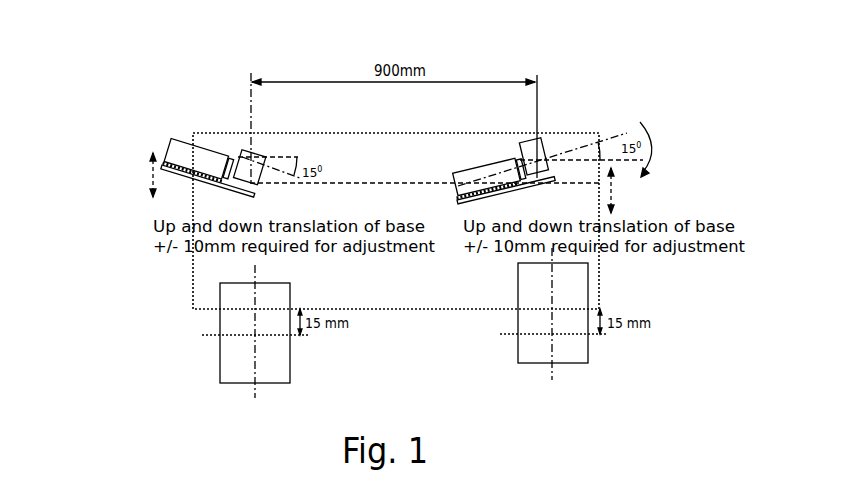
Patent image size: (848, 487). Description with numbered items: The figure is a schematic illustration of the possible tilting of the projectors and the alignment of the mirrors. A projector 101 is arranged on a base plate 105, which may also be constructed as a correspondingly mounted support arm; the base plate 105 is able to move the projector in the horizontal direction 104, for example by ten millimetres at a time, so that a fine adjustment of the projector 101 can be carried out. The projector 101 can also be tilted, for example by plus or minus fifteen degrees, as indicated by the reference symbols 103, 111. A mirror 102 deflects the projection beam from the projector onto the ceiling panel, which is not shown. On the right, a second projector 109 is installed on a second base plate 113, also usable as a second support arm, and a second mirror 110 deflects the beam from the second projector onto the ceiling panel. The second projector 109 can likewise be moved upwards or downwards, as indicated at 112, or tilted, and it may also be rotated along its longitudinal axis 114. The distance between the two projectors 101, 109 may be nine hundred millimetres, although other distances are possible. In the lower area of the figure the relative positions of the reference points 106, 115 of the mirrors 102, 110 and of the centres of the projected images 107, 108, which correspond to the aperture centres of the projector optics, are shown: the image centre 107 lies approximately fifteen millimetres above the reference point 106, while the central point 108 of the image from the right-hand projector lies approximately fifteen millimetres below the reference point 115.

The projector 101 is at (164, 150).
The mirror 102 is at (240, 152).
The projector tilt 103 is at (300, 157).
The horizontal direction 104 is at (150, 168).
The base plate 105 is at (187, 182).
The reference point 106 is at (257, 335).
The image centre 107 is at (256, 310).
The central point of the image 108 is at (552, 334).
The second projector 109 is at (460, 172).
The second mirror 110 is at (540, 142).
The projector tilt 111 is at (652, 148).
The vertical translation of second base 112 is at (612, 197).
The second base plate 113 is at (505, 193).
The longitudinal axis 114 is at (626, 133).
The reference point 115 is at (552, 310).